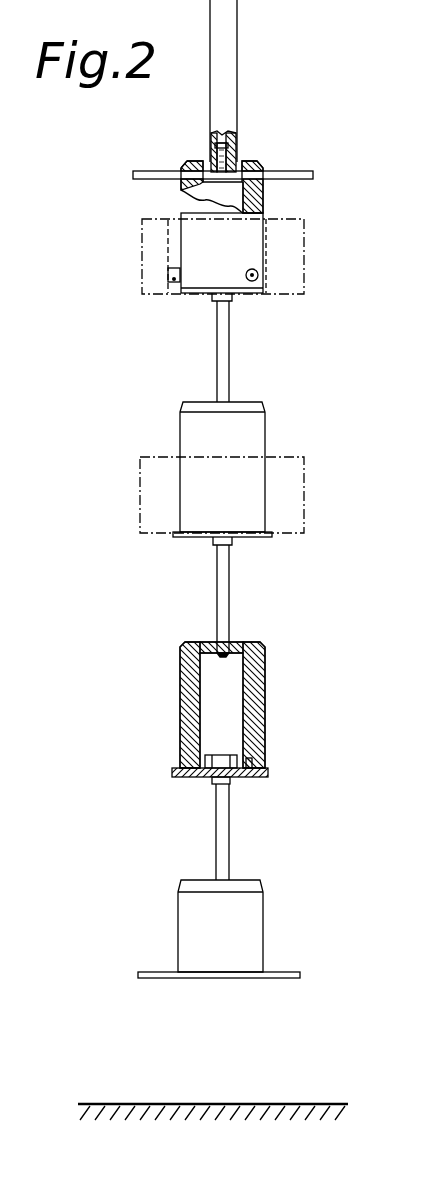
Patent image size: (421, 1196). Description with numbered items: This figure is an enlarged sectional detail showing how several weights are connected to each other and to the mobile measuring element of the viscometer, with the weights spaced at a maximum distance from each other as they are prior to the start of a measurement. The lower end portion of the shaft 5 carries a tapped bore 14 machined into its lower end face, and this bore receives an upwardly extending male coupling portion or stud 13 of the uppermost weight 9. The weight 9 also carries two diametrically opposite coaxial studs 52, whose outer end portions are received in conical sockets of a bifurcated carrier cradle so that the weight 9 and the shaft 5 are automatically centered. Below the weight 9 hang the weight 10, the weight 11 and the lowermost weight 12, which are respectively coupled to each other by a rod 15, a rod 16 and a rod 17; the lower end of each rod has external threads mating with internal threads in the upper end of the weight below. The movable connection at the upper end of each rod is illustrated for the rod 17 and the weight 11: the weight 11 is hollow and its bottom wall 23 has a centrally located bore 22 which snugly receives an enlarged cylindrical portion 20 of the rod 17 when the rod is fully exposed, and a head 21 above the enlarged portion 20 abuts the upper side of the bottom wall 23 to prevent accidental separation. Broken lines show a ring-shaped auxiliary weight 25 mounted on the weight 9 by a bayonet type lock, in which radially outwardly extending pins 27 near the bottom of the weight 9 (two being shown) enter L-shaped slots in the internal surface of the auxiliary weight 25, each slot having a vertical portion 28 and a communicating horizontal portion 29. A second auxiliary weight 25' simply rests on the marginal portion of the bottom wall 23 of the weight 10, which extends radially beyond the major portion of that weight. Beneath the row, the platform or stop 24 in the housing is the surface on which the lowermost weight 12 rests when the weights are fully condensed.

The shaft 5 is at (223, 70).
The tapped bore 14 is at (210, 148).
The stud 13 is at (260, 162).
The coaxial studs 52 is at (158, 175).
The auxiliary weight 25 is at (245, 236).
The uppermost weight 9 is at (255, 245).
The vertical portions 28 is at (168, 244).
The horizontal portions 29 is at (168, 278).
The pins 27 is at (172, 283).
The rod 15 is at (229, 378).
The second auxiliary weight 25' is at (260, 488).
The weight 10 is at (250, 492).
The bottom wall 23 is at (268, 538).
The rod 16 is at (229, 600).
The weight 11 is at (248, 680).
The head 21 is at (220, 755).
The bore 22 is at (208, 782).
The enlarged cylindrical portion 20 is at (212, 785).
The rod 17 is at (228, 835).
The lowermost weight 12 is at (235, 950).
The platform or stop 24 is at (298, 1104).